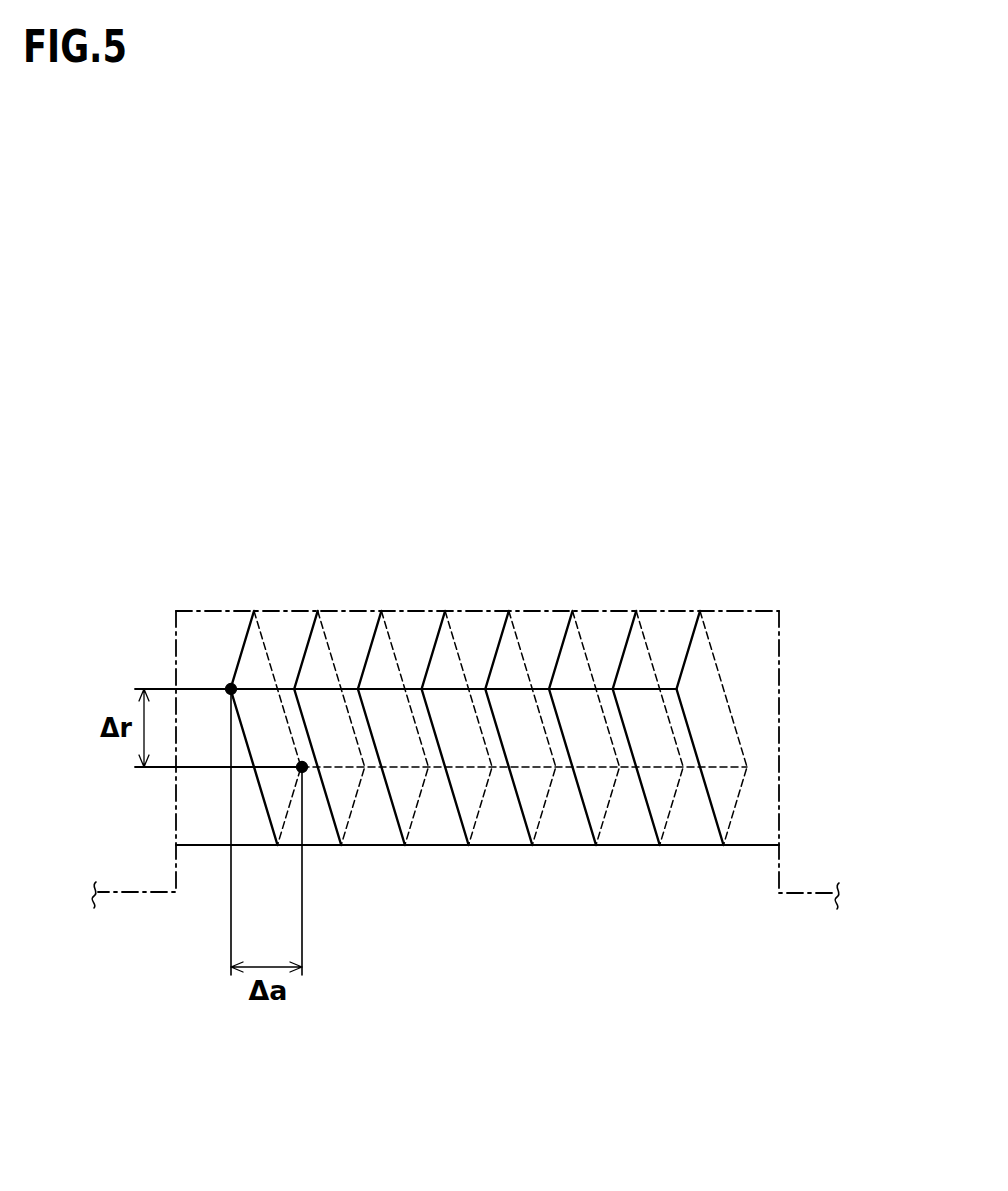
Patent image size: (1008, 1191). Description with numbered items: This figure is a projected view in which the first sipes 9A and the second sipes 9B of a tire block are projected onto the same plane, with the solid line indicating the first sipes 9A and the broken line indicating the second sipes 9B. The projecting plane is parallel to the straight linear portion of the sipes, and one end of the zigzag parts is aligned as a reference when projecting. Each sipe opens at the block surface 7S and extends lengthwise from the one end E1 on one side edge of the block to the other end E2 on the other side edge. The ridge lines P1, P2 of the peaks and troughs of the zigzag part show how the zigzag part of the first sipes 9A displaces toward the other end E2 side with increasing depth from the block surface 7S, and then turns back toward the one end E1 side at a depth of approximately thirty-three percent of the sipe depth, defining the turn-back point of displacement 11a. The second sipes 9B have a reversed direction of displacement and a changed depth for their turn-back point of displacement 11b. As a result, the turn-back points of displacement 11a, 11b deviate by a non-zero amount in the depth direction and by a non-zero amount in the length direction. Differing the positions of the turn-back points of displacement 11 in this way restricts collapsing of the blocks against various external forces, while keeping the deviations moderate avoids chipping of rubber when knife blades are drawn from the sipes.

The block surface 7S is at (223, 611).
The one end of the sipe E1 is at (779, 641).
The other end of the sipe E2 is at (176, 638).
The first sipes 9A is at (681, 648).
The second sipes 9B is at (720, 655).
The turn-back points of displacement 11 is at (387, 817).
The turn-back point of displacement of the first sipes 11a is at (231, 689).
The turn-back point of displacement of the second sipes 11b is at (302, 767).
The ridge line of peaks of the zigzag part P1 is at (247, 643).
The ridge line of troughs of the zigzag part P2 is at (312, 641).